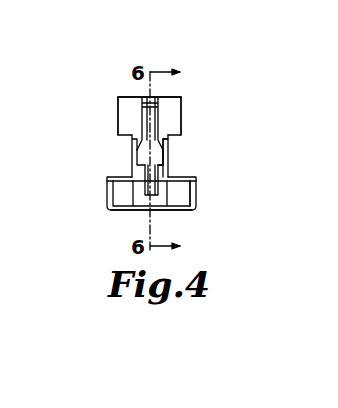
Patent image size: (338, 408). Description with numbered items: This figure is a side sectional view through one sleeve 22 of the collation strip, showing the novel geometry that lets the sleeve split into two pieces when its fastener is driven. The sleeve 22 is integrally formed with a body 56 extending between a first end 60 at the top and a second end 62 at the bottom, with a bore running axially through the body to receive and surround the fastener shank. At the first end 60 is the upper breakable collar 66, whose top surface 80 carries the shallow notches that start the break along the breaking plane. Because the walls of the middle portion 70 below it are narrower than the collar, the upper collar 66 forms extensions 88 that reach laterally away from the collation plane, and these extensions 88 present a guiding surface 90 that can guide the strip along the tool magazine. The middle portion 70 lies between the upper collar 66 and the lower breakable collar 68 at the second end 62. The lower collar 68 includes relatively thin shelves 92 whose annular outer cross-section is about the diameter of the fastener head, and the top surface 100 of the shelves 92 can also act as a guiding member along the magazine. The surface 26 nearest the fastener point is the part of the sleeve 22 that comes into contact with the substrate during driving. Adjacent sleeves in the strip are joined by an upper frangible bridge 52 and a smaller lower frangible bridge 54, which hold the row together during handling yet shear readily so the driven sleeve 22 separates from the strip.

The sleeve 22 is at (99, 105).
The first end 60 is at (118, 98).
The top surface 80 is at (181, 97).
The upper frangible bridge 52 is at (181, 108).
The extension 88 is at (118, 118).
The upper breakable collar 66 is at (181, 128).
The guiding surface 90 is at (132, 141).
The body 56 is at (137, 152).
The middle portion 70 is at (140, 178).
The lower frangible bridge 54 is at (170, 168).
The top surface 100 is at (168, 175).
The shelves 92 is at (190, 180).
The second end 62 is at (115, 211).
The lower breakable collar 68 is at (168, 193).
The surface 26 is at (157, 211).